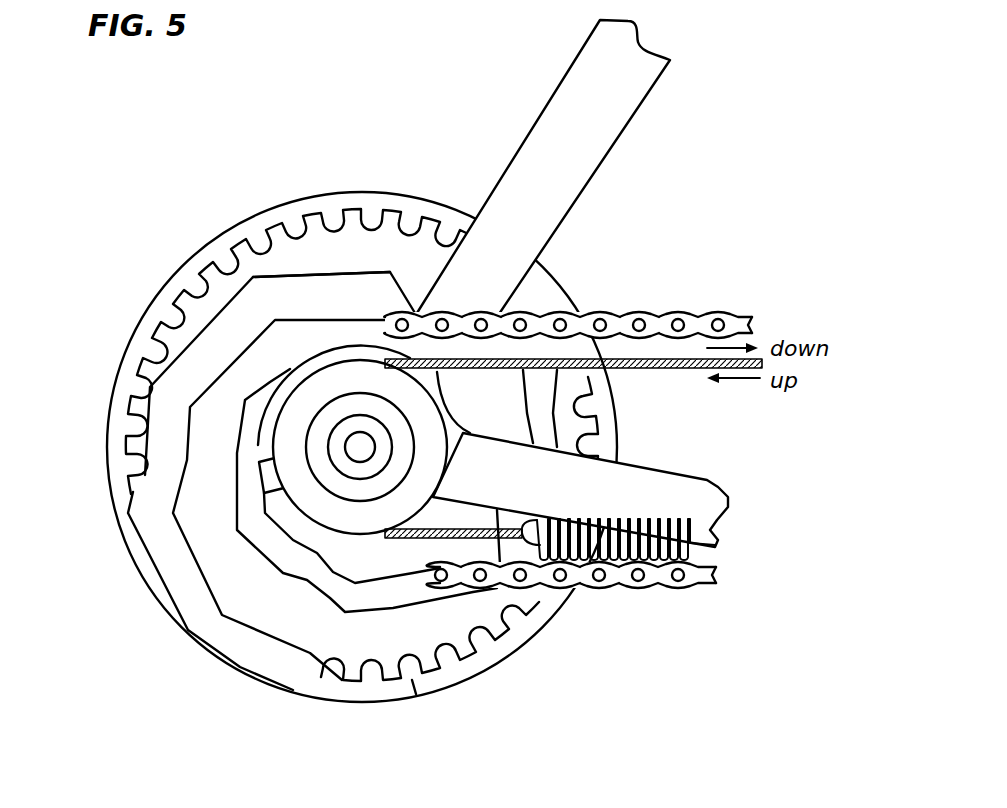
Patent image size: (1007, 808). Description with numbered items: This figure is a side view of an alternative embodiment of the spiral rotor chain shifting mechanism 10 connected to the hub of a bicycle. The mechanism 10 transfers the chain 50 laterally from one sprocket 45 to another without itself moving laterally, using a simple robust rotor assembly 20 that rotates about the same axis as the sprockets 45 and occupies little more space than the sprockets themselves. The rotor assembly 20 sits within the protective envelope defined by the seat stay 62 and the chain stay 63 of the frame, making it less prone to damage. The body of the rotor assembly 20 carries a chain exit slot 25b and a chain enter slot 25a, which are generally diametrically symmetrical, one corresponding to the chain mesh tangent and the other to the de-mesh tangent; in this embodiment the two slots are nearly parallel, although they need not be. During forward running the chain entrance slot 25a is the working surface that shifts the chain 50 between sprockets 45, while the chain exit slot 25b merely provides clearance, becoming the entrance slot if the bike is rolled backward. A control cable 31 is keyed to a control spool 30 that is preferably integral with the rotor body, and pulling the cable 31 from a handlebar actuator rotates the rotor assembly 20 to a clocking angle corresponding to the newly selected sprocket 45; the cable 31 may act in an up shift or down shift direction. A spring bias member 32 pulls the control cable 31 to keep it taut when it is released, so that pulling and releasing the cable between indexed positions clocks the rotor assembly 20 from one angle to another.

The spiral rotor chain shifting mechanism 10 is at (126, 304).
The rotor assembly 20 is at (306, 256).
The chain enter slot 25a is at (374, 622).
The chain exit slot 25b is at (353, 264).
The control spool 30 is at (262, 478).
The control cable 31 is at (662, 362).
The spring bias member 32 is at (640, 516).
The sprocket 45 is at (232, 247).
The chain 50 is at (617, 316).
The seat stay 62 is at (548, 97).
The chain stay 63 is at (710, 481).